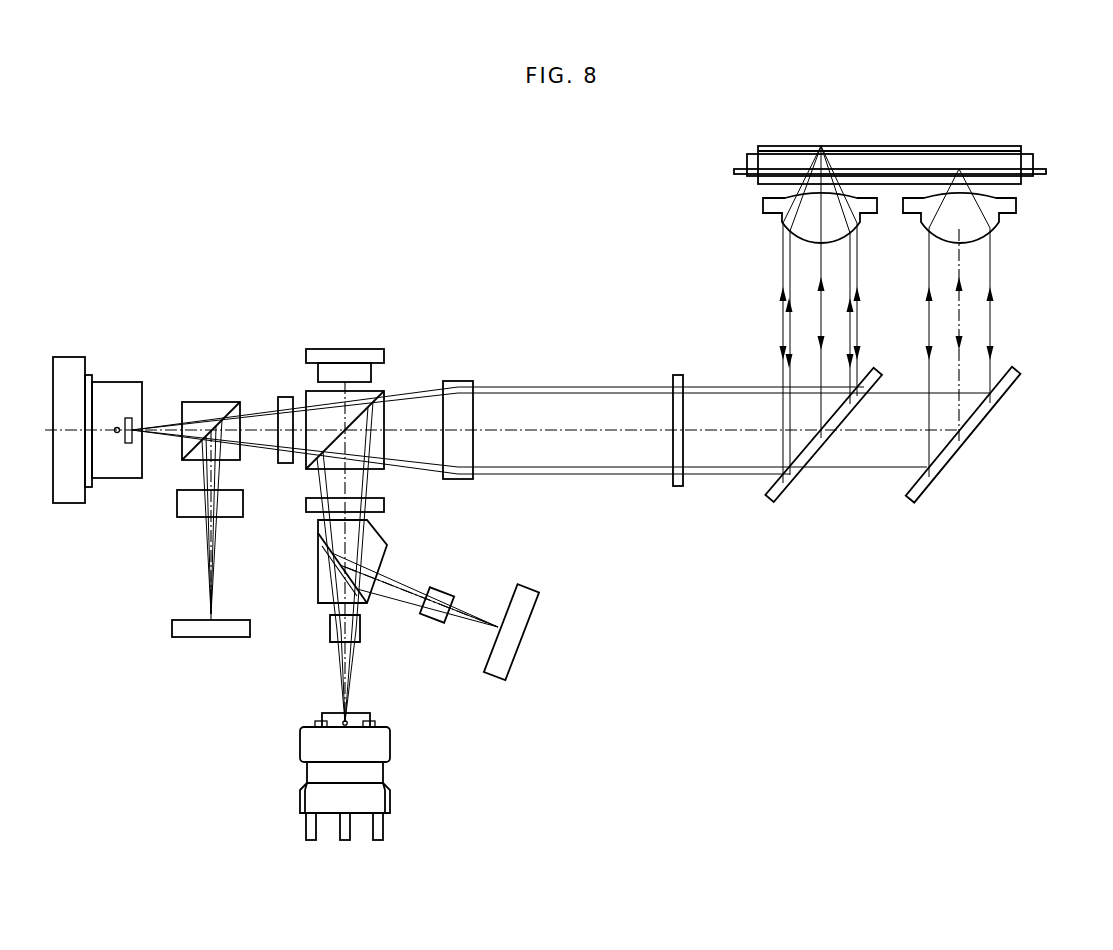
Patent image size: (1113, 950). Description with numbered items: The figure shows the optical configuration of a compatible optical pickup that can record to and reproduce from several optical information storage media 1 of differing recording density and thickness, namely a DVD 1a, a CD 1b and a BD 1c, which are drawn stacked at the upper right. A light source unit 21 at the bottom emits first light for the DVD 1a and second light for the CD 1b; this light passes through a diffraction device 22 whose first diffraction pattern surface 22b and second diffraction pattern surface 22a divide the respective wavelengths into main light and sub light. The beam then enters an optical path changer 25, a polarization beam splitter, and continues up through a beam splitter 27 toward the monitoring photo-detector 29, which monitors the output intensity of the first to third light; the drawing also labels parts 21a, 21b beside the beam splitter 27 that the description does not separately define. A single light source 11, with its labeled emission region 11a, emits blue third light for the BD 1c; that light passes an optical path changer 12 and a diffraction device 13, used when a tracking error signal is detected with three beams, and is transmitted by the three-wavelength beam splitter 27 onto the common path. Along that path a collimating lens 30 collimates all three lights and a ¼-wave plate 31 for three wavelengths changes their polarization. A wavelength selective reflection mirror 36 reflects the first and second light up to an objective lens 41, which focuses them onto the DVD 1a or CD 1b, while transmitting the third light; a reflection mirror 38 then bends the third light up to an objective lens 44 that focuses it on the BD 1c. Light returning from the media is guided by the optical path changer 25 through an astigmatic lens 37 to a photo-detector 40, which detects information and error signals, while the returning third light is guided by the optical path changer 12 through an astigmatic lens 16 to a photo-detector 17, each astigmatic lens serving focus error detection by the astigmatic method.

The optical information storage media 1 is at (888, 134).
The DVD 1a is at (1033, 160).
The CD 1b is at (1017, 148).
The BD 1c is at (1046, 171).
The single light source 11 is at (118, 382).
The light emitting point 11a is at (163, 423).
The optical path changer 12 is at (211, 402).
The diffraction device 13 is at (287, 397).
The astigmatic lens 16 is at (177, 505).
The photo-detector 17 is at (172, 631).
The light source unit 21 is at (391, 750).
The first surface of beam splitter 21a is at (372, 484).
The optical element 21b is at (323, 485).
The diffraction device 22 is at (360, 632).
The second diffraction pattern surface 22a is at (330, 640).
The first diffraction pattern surface 22b is at (330, 618).
The optical path changer 25 is at (388, 545).
The beam splitter 27 is at (378, 397).
The monitoring photo-detector 29 is at (367, 351).
The collimating lens 30 is at (458, 381).
The ¼-wave plate 31 is at (676, 375).
The wavelength selective reflection mirror 36 is at (792, 484).
The astigmatic lens 37 is at (445, 590).
The reflection mirror 38 is at (935, 484).
The photo-detector 40 is at (527, 590).
The objective lens 41 is at (763, 206).
The objective lens 44 is at (1016, 206).